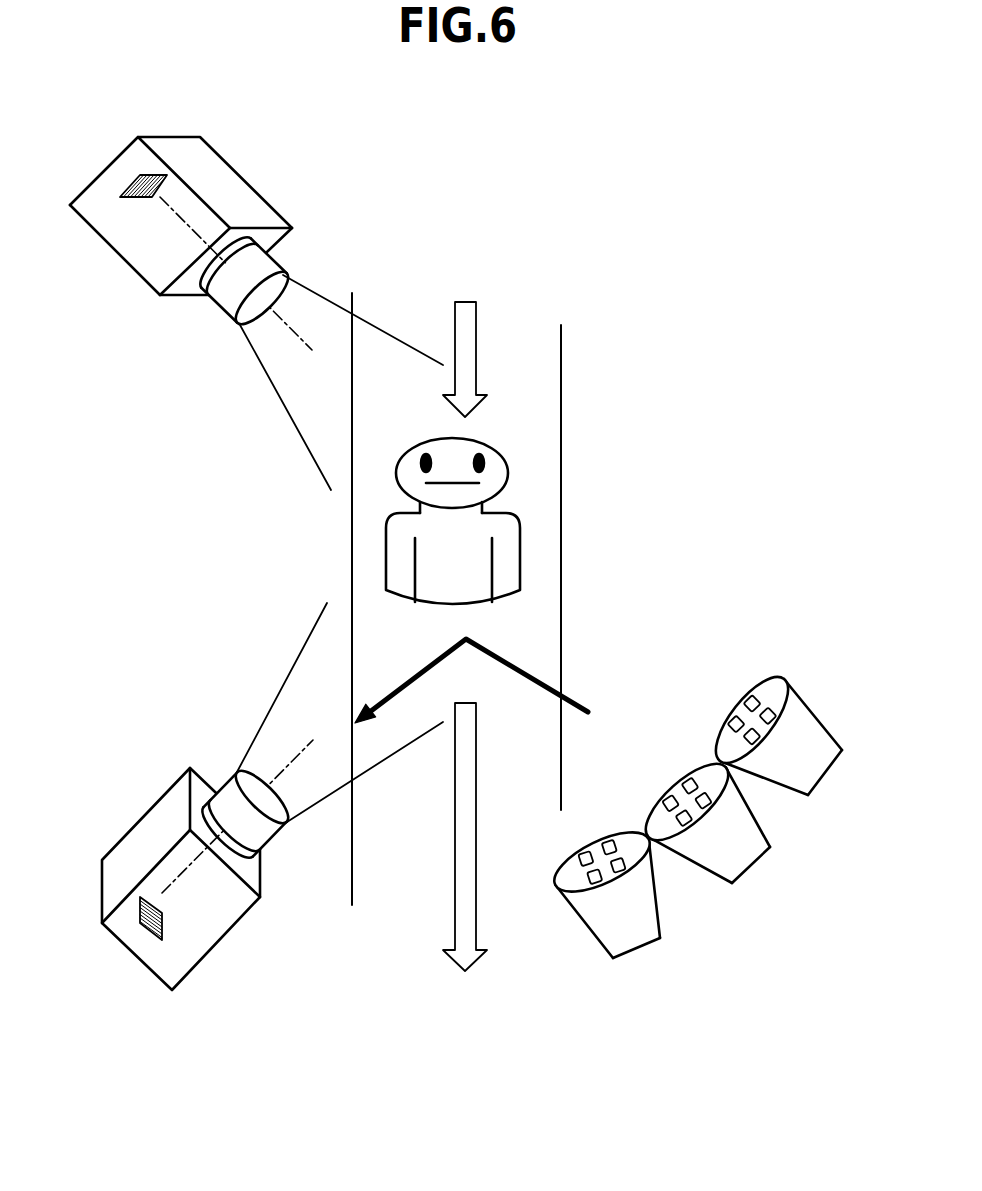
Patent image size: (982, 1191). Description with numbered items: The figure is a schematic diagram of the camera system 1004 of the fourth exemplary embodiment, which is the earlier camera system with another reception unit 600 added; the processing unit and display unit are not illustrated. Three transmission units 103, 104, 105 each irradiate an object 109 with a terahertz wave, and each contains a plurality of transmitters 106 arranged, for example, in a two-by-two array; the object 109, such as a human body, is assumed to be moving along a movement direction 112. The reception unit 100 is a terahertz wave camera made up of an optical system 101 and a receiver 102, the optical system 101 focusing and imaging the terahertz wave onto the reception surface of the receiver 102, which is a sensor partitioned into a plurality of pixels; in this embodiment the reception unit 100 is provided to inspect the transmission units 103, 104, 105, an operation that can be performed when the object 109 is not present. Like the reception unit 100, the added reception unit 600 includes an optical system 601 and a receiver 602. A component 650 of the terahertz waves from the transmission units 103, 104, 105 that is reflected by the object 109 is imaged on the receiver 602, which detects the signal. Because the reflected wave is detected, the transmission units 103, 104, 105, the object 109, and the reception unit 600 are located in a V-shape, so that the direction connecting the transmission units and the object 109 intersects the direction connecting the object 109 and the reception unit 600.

The camera system 1004 is at (757, 164).
The reception unit 100 is at (230, 165).
The optical system 101 is at (263, 265).
The receiver 102 is at (133, 180).
The transmission unit 103 is at (781, 710).
The transmission unit 104 is at (747, 860).
The transmission unit 105 is at (627, 932).
The transmitters 106 is at (750, 692).
The object 109 is at (520, 528).
The movement direction 112 is at (455, 958).
The reception unit 600 is at (140, 817).
The optical system 601 is at (263, 832).
The receiver 602 is at (152, 933).
The component 650 is at (403, 682).